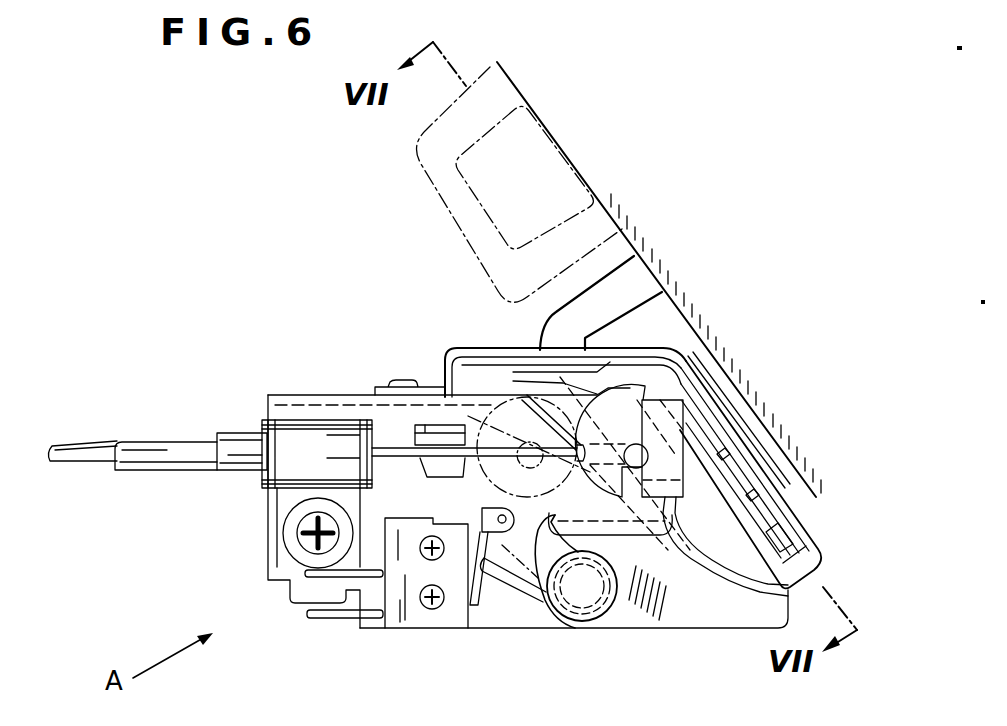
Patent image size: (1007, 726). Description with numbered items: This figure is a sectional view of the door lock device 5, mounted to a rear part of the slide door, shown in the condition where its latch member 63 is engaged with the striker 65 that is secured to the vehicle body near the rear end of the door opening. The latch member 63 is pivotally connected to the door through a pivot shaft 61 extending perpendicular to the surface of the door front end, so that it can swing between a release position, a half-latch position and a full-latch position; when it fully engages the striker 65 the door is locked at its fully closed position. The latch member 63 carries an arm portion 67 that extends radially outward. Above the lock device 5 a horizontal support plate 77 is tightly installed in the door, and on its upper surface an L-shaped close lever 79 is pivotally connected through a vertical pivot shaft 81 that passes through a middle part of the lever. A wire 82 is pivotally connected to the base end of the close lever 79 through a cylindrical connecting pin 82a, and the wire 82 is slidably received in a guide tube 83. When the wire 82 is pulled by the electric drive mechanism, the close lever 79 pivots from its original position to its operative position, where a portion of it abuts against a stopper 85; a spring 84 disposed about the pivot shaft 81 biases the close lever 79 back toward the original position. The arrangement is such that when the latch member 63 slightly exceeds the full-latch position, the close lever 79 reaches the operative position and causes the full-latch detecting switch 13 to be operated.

The door lock device 5 is at (716, 352).
The full-latch detecting switch 13 is at (417, 613).
The pivot shaft 61 is at (758, 428).
The latch member 63 is at (728, 368).
The striker 65 is at (489, 65).
The arm portion 67 is at (776, 533).
The support plate 77 is at (371, 412).
The close lever 79 is at (637, 444).
The pivot shaft 81 is at (590, 597).
The wire 82 is at (400, 447).
The connecting pin 82a is at (652, 402).
The guide tube 83 is at (193, 452).
The spring 84 is at (535, 603).
The stopper 85 is at (442, 425).